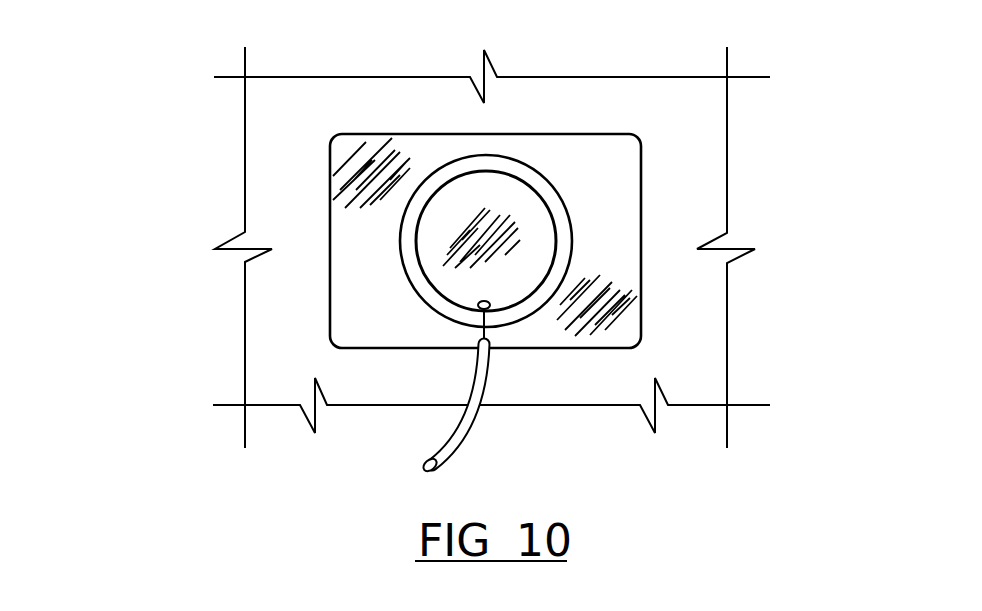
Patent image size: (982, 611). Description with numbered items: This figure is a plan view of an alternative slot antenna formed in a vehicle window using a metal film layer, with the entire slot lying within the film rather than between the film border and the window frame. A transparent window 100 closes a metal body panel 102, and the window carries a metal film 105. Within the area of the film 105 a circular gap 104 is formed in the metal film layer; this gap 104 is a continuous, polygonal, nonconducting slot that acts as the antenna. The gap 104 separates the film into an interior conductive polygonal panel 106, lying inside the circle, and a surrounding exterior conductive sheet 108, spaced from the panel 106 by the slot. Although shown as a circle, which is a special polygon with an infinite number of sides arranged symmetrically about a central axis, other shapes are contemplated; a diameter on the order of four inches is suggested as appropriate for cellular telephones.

The transparent window 100 is at (528, 150).
The metal body panel 102 is at (670, 172).
The circular gap 104 is at (458, 163).
The film 105 is at (625, 185).
The interior conductive polygonal panel 106 is at (437, 257).
The exterior conductive sheet 108 is at (610, 308).